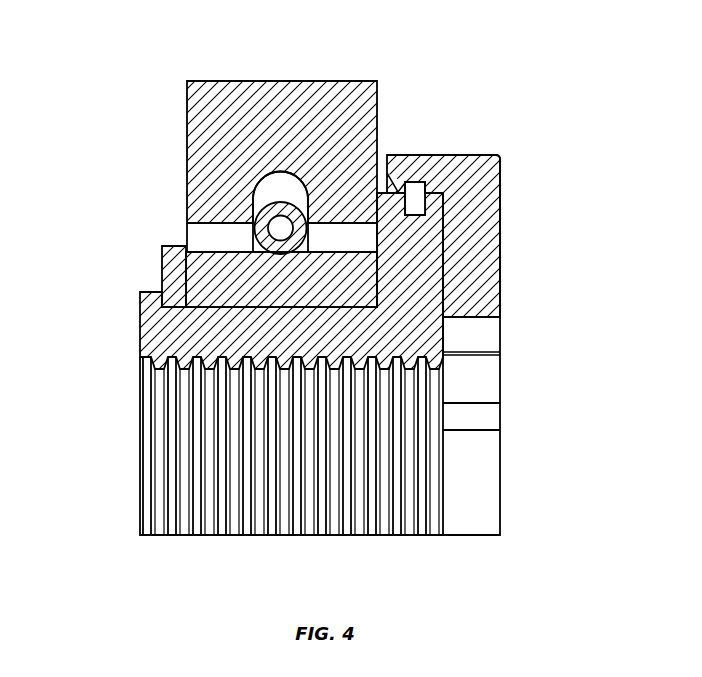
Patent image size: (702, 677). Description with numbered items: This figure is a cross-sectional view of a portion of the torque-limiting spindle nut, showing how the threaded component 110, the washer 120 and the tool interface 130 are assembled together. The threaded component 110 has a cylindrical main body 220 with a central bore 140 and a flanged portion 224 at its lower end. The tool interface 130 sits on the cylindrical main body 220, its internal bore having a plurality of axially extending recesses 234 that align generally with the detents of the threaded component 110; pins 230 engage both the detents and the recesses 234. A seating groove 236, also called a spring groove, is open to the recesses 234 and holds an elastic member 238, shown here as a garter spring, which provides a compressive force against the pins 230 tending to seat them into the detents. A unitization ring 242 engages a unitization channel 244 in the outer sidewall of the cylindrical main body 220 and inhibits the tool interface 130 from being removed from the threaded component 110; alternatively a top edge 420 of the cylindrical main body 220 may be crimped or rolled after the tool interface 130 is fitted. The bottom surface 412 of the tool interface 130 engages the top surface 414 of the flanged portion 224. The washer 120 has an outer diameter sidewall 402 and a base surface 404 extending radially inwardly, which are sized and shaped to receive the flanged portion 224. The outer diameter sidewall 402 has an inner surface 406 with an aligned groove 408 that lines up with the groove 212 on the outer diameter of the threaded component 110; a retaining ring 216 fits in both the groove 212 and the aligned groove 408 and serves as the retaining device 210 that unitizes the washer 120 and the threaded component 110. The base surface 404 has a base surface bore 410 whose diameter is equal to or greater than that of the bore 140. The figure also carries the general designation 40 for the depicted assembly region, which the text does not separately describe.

The heat sink assembly 40 is at (526, 413).
The threaded component 110 is at (140, 325).
The washer 120 is at (522, 166).
The tool interface 130 is at (315, 81).
The bore 140 is at (474, 498).
The retaining device 210 is at (428, 140).
The groove 212 is at (415, 218).
The retaining ring 216 is at (420, 186).
The cylindrical main body 220 is at (381, 342).
The flanged portion 224 is at (420, 300).
The pins 230 is at (198, 258).
The axially extending recesses 234 is at (198, 233).
The seating groove 236 is at (276, 178).
The elastic member 238 is at (267, 208).
The unitization ring 242 is at (162, 258).
The unitization channel 244 is at (293, 305).
The outer diameter sidewall 402 is at (487, 155).
The base surface 404 is at (443, 220).
The inner surface 406 is at (432, 185).
The aligned groove 408 is at (408, 193).
The base surface bore 410 is at (498, 333).
The bottom surface 412 is at (377, 291).
The top surface 414 is at (378, 302).
The top edge 420 is at (140, 296).